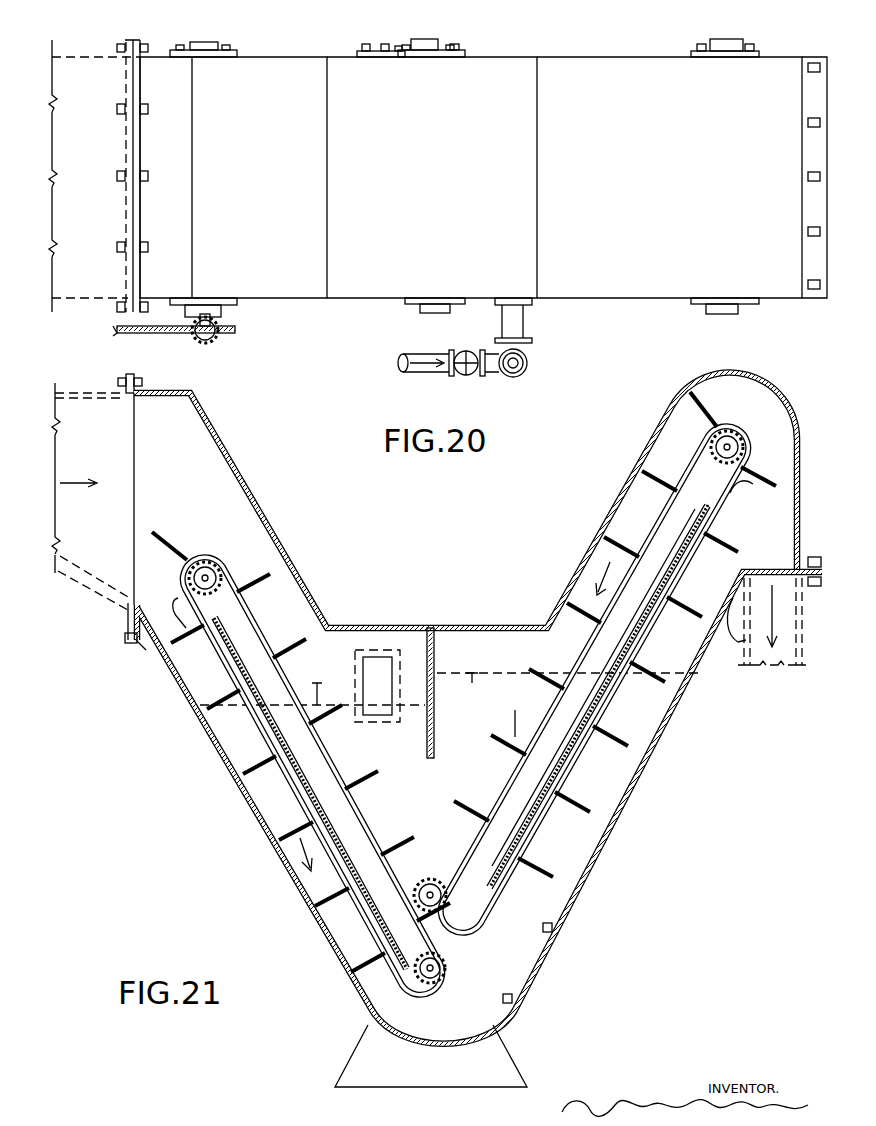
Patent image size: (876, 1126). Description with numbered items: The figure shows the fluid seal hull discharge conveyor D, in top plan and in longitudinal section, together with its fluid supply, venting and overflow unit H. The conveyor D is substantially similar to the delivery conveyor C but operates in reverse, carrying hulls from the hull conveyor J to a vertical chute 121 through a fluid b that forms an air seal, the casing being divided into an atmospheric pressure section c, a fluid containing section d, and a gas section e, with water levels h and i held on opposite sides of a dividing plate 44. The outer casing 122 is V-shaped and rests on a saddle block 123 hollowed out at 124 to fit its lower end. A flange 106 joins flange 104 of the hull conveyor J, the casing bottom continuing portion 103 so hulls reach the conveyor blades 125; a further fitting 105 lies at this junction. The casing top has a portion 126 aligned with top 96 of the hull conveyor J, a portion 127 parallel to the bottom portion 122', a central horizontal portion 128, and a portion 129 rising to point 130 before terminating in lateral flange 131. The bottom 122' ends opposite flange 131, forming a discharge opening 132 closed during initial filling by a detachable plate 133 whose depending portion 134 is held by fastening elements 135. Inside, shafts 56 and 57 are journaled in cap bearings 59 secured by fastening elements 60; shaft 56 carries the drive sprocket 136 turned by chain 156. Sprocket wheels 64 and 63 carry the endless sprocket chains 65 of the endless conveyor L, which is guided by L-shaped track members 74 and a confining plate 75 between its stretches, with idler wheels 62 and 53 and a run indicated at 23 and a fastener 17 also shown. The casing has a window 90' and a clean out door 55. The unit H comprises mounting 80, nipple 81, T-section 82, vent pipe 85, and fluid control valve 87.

In FIG. 20, the top 96 is at (84, 73).
In FIG. 21, the top 96 is at (100, 398).
In FIG. 20, the top portion 126 is at (160, 118).
In FIG. 21, the top portion 126 is at (190, 393).
In FIG. 20, the downwardly extending top portion 127 is at (233, 177).
In FIG. 21, the downwardly extending top portion 127 is at (297, 557).
In FIG. 20, the central horizontal portion 128 is at (432, 177).
In FIG. 21, the central horizontal portion 128 is at (460, 626).
In FIG. 20, the upwardly extending top portion 129 is at (628, 242).
In FIG. 21, the upwardly extending top portion 129 is at (600, 522).
In FIG. 20, the lateral flange 131 is at (812, 62).
In FIG. 21, the lateral flange 131 is at (816, 558).
In FIG. 20, the cap bearings 59 is at (240, 48).
In FIG. 20, the window 90' is at (366, 34).
In FIG. 21, the window 90' is at (377, 656).
In FIG. 20, the bolt 17 is at (357, 52).
In FIG. 21, the bolt 17 is at (552, 928).
In FIG. 20, the fastening elements 60 is at (462, 48).
In FIG. 20, the shaft 56 is at (207, 320).
In FIG. 21, the shaft 56 is at (200, 578).
In FIG. 20, the drive pulley or sprocket 136 is at (237, 331).
In FIG. 20, the chain 156 is at (150, 336).
In FIG. 20, the mounting 80 is at (533, 305).
In FIG. 20, the nipple 81 is at (502, 331).
In FIG. 20, the T-section 82 is at (528, 347).
In FIG. 20, the vent pipe 85 is at (516, 366).
In FIG. 20, the water or fluid control valve 87 is at (466, 375).
In FIG. 20, the fluid supply, venting and overflow unit H is at (402, 362).
In FIG. 21, the hull conveyor J is at (83, 392).
In FIG. 21, the outer casing 122 is at (299, 564).
In FIG. 21, the bottom portion 122' is at (479, 808).
In FIG. 21, the point 130 is at (720, 372).
In FIG. 21, the discharge opening 132 is at (770, 571).
In FIG. 21, the detachable plate 133 is at (767, 612).
In FIG. 21, the depending portion 134 is at (722, 626).
In FIG. 21, the fastening elements 135 is at (738, 648).
In FIG. 21, the vertical chute 121 is at (806, 623).
In FIG. 21, the bottom portion of hull conveyor 103 is at (86, 583).
In FIG. 21, the flange 104 is at (128, 615).
In FIG. 21, the bracket 105 is at (125, 637).
In FIG. 21, the flange 106 is at (140, 645).
In FIG. 21, the partition or dividing plate 44 is at (435, 730).
In FIG. 21, the endless conveyor L is at (229, 573).
In FIG. 21, the endless sprocket chains 65 is at (310, 787).
In FIG. 21, the L-shaped track members 74 is at (222, 655).
In FIG. 21, the confining plate 75 is at (660, 565).
In FIG. 21, the conveyor blades 125 is at (190, 546).
In FIG. 21, the conveyor run 23 is at (552, 610).
In FIG. 21, the sprocket wheels 64 is at (208, 565).
In FIG. 21, the shaft 57 is at (725, 447).
In FIG. 21, the idler sprocket 62 is at (436, 892).
In FIG. 21, the sprocket wheels 63 is at (425, 885).
In FIG. 21, the lower sprocket 53 is at (421, 947).
In FIG. 21, the clean out door 55 is at (540, 947).
In FIG. 21, the saddle support or block 123 is at (498, 1063).
In FIG. 21, the hollowed-out seat 124 is at (395, 1040).
In FIG. 21, the fluid seal discharge conveyor D is at (330, 622).
In FIG. 21, the delivery conveyor C is at (567, 643).
In FIG. 21, the gas section e is at (204, 483).
In FIG. 21, the water level h is at (568, 705).
In FIG. 21, the water level i is at (312, 686).
In FIG. 21, the fluid b is at (363, 744).
In FIG. 21, the fluid containing section d is at (390, 804).